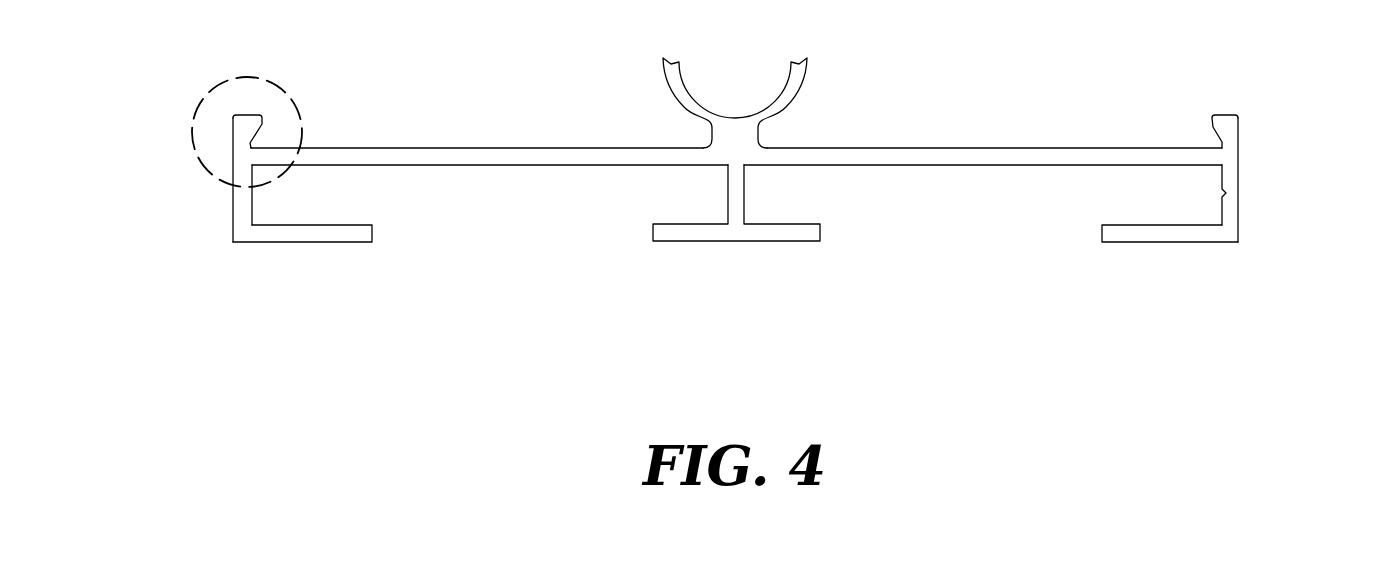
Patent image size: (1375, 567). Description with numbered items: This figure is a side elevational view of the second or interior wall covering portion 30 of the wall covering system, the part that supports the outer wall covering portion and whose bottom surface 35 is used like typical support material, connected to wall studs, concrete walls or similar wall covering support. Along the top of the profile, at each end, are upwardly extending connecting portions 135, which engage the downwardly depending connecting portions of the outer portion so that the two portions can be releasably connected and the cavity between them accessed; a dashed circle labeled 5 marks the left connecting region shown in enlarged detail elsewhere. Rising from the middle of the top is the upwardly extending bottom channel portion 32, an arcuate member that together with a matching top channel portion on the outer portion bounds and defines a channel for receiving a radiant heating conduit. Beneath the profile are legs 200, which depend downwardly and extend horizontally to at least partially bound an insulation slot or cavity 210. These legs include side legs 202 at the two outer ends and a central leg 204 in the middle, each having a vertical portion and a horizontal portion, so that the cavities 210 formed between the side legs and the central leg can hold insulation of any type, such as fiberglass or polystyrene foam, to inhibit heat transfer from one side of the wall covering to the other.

The detail region 5 is at (193, 138).
The second wall covering portion 30 is at (210, 270).
The bottom channel portion 32 is at (813, 87).
The bottom surface 35 is at (337, 242).
The upwardly extending connecting portion 135 is at (1240, 132).
The legs 200 is at (233, 207).
The side legs 202 is at (230, 218).
The central leg 204 is at (747, 241).
The insulation cavity 210 is at (990, 210).